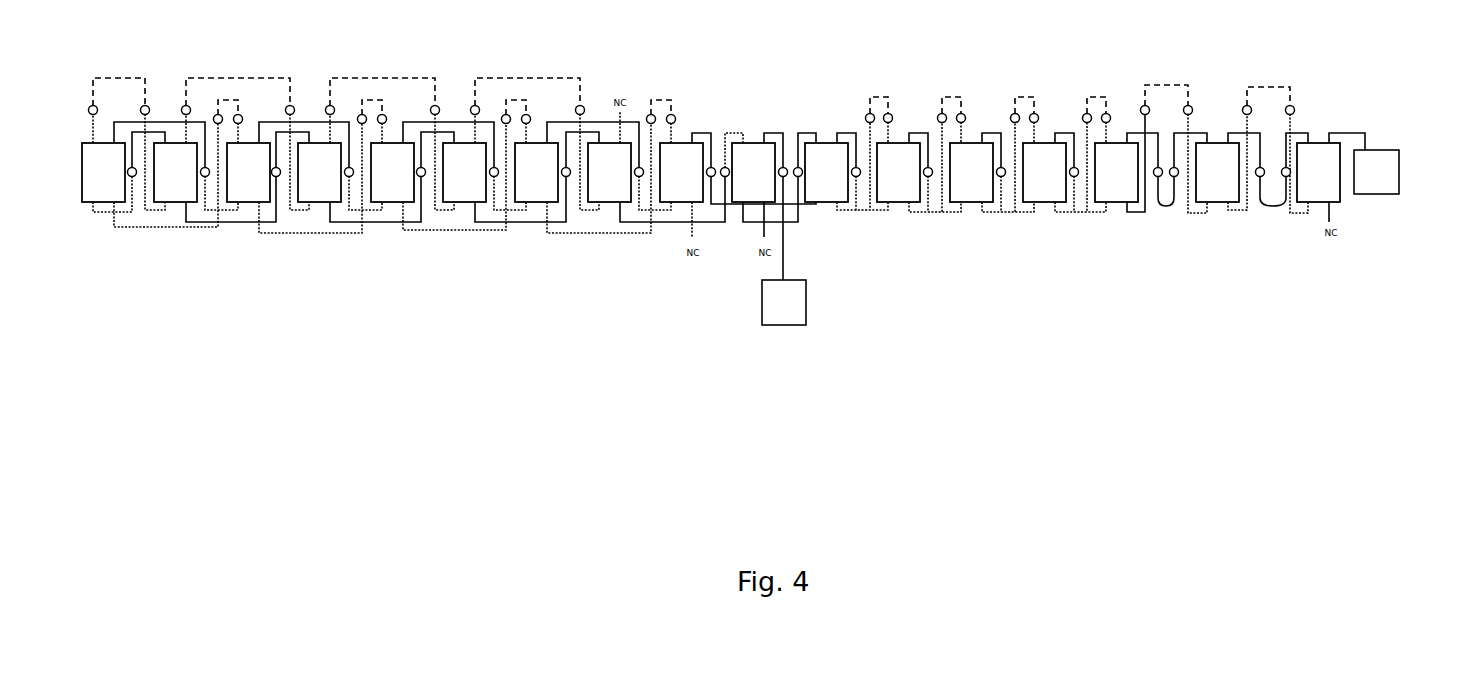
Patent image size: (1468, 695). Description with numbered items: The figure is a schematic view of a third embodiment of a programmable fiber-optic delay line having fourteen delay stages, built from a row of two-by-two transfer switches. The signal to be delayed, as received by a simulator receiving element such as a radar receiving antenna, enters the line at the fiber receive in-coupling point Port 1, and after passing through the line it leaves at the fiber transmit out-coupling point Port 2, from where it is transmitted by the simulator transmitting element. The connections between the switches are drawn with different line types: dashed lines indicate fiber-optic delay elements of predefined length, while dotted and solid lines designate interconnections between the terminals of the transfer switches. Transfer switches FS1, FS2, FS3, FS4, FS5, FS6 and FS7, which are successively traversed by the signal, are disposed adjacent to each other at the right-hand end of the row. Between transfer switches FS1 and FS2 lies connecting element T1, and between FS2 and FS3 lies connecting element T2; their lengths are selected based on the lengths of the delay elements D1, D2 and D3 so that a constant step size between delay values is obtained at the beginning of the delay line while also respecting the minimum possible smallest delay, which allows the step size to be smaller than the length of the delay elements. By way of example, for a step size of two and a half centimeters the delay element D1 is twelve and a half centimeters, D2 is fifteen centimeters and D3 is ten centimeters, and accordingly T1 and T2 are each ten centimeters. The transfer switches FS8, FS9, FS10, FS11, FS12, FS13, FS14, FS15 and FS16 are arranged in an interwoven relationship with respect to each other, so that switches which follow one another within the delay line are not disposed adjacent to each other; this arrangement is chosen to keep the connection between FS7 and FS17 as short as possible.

The delay element D1 is at (1269, 86).
The delay element D2 is at (1168, 82).
The delay element D3 is at (1098, 90).
The connecting element T1 is at (1268, 200).
The connecting element T2 is at (1168, 208).
The in-coupling point FIBER RX Port 1 is at (761, 315).
The out-coupling point FIBER TX Port 2 is at (1410, 200).
The transfer switch FS1 is at (1318, 172).
The transfer switch FS2 is at (1217, 172).
The transfer switch FS3 is at (1116, 172).
The transfer switch FS4 is at (1044, 172).
The transfer switch FS5 is at (971, 172).
The transfer switch FS6 is at (898, 172).
The transfer switch FS7 is at (826, 172).
The transfer switch FS8 is at (681, 172).
The transfer switch FS9 is at (536, 172).
The transfer switch FS10 is at (392, 172).
The transfer switch FS11 is at (248, 172).
The transfer switch FS12 is at (103, 172).
The transfer switch FS13 is at (175, 172).
The transfer switch FS14 is at (319, 172).
The transfer switch FS15 is at (464, 172).
The transfer switch FS16 is at (609, 172).
The transfer switch FS17 is at (753, 172).